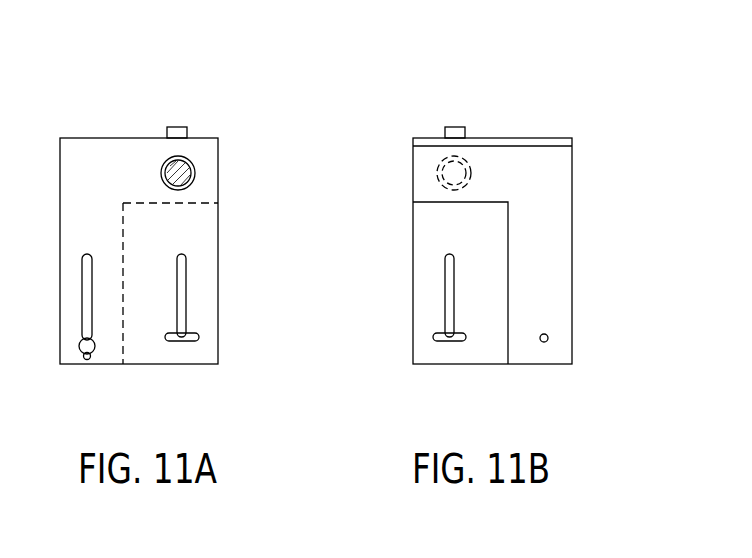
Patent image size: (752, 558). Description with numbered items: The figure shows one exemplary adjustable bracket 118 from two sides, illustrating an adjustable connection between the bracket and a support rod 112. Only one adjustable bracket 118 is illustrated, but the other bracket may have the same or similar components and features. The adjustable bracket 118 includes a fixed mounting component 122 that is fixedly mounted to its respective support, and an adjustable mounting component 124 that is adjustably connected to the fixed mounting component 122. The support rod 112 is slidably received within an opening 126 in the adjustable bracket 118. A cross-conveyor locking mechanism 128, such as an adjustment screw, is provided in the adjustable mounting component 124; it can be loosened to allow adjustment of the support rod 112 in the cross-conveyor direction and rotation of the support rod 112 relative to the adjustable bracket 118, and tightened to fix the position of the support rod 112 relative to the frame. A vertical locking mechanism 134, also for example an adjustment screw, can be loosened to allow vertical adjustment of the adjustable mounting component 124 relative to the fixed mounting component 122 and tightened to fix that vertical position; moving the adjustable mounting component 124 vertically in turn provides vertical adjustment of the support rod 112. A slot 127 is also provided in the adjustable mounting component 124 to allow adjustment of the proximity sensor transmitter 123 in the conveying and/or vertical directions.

In FIG. 11A, the support rod 112 is at (183, 173).
In FIG. 11B, the support rod 112 is at (454, 173).
In FIG. 11A, the adjustable bracket 118 is at (191, 191).
In FIG. 11B, the adjustable bracket 118 is at (539, 191).
In FIG. 11B, the fixed mounting component 122 is at (562, 226).
In FIG. 11A, the transmitter 123 is at (183, 337).
In FIG. 11B, the transmitter 123 is at (449, 337).
In FIG. 11A, the adjustable mounting component 124 is at (208, 225).
In FIG. 11B, the adjustable mounting component 124 is at (421, 233).
In FIG. 11A, the opening 126 is at (161, 173).
In FIG. 11A, the slot 127 is at (188, 342).
In FIG. 11B, the slot 127 is at (456, 342).
In FIG. 11A, the cross-conveyor locking mechanism 128 is at (175, 125).
In FIG. 11B, the cross-conveyor locking mechanism 128 is at (455, 125).
In FIG. 11A, the vertical locking mechanism 134 is at (81, 347).